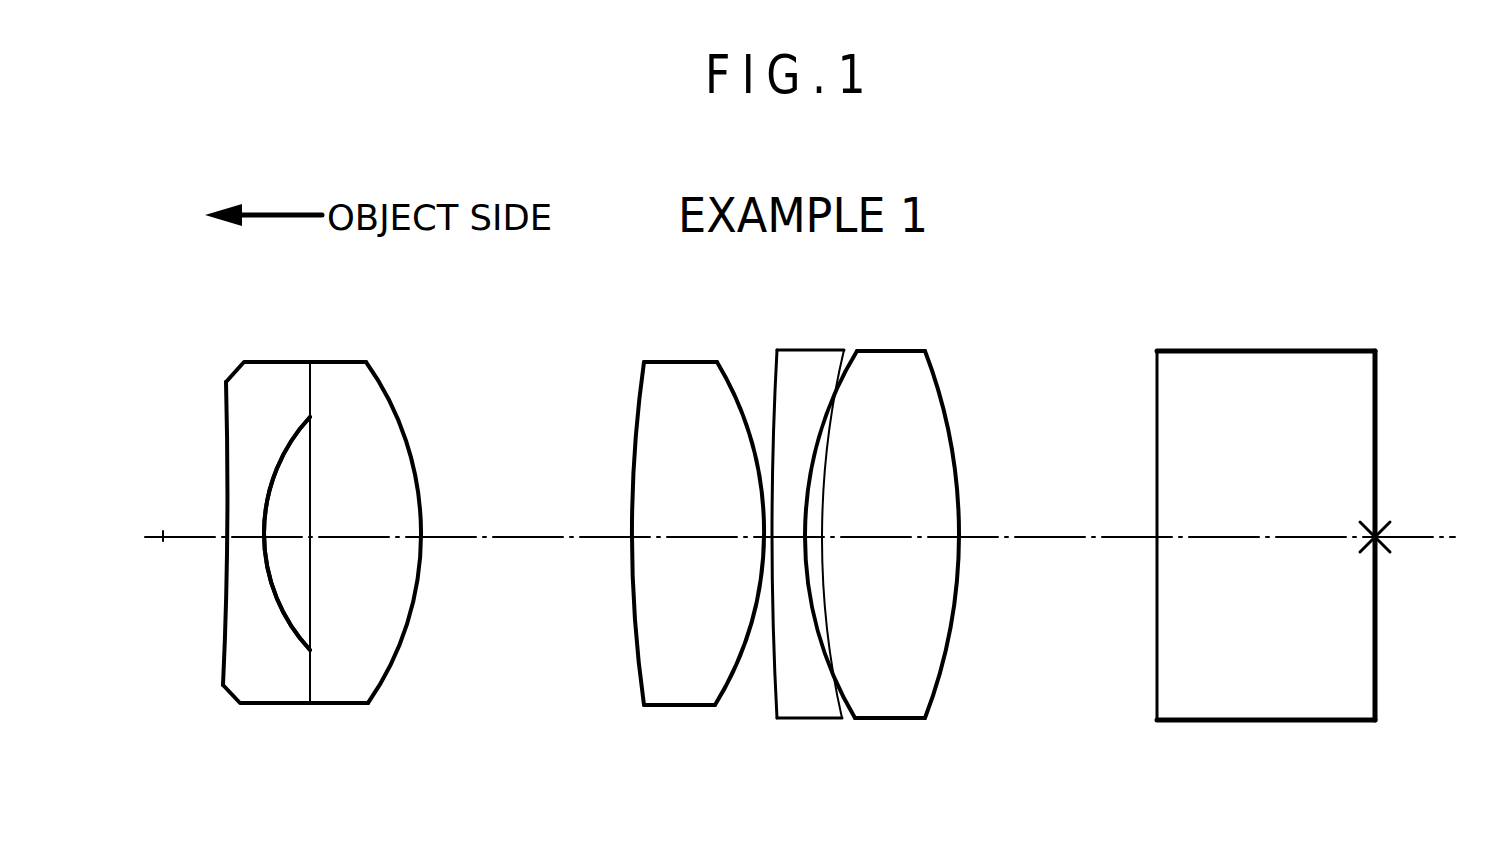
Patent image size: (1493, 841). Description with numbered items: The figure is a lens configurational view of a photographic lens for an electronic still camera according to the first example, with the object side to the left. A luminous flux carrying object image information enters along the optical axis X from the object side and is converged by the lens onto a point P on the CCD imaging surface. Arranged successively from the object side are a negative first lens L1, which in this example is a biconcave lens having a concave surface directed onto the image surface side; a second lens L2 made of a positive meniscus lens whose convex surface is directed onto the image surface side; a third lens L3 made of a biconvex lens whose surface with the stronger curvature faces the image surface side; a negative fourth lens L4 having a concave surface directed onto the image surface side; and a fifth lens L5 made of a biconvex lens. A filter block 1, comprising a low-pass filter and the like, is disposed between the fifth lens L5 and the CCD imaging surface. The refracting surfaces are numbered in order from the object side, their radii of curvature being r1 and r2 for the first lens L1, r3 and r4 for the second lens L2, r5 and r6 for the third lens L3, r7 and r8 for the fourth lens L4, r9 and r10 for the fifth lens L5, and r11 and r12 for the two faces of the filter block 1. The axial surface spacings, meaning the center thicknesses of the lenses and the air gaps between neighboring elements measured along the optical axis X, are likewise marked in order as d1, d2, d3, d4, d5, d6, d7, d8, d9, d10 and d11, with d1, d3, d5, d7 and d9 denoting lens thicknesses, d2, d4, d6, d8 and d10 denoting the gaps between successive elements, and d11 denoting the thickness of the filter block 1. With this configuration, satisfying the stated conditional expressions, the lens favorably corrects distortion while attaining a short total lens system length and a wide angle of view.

The negative first lens L1 is at (268, 368).
The second lens L2 is at (354, 372).
The third lens L3 is at (663, 374).
The negative fourth lens L4 is at (807, 366).
The fifth lens L5 is at (900, 352).
The radius of curvature of first lens surface r1 is at (226, 416).
The radius of curvature of second lens surface r2 is at (278, 488).
The radius of curvature of third lens surface r3 is at (312, 448).
The radius of curvature of fourth lens surface r4 is at (419, 460).
The radius of curvature of fifth lens surface r5 is at (635, 413).
The radius of curvature of sixth lens surface r6 is at (727, 378).
The radius of curvature of seventh lens surface r7 is at (775, 373).
The radius of curvature of eighth lens surface r8 is at (838, 452).
The radius of curvature of ninth lens surface r9 is at (822, 478).
The radius of curvature of tenth lens surface r10 is at (953, 433).
The radius of curvature of eleventh surface r11 is at (1157, 387).
The radius of curvature of twelfth surface r12 is at (1376, 378).
The axial surface spacing d1 is at (246, 538).
The axial surface spacing d2 is at (291, 541).
The axial surface spacing d3 is at (356, 530).
The axial surface spacing d4 is at (523, 535).
The axial surface spacing d5 is at (686, 535).
The axial surface spacing d6 is at (764, 542).
The axial surface spacing d7 is at (783, 542).
The axial surface spacing d8 is at (814, 548).
The axial surface spacing d9 is at (885, 535).
The axial surface spacing d10 is at (1055, 535).
The axial surface spacing d11 is at (1230, 535).
The filter block 1 is at (1267, 362).
The point on CCD imaging surface P is at (1382, 548).
The optical axis X is at (163, 542).